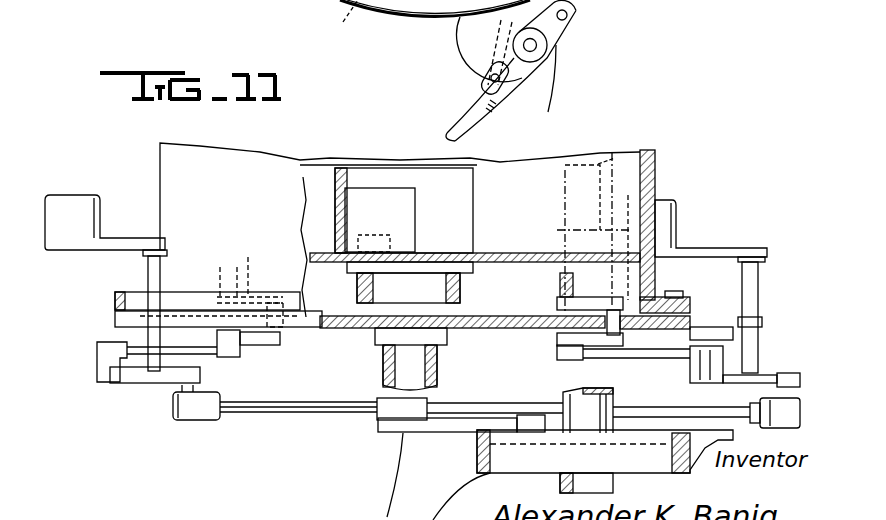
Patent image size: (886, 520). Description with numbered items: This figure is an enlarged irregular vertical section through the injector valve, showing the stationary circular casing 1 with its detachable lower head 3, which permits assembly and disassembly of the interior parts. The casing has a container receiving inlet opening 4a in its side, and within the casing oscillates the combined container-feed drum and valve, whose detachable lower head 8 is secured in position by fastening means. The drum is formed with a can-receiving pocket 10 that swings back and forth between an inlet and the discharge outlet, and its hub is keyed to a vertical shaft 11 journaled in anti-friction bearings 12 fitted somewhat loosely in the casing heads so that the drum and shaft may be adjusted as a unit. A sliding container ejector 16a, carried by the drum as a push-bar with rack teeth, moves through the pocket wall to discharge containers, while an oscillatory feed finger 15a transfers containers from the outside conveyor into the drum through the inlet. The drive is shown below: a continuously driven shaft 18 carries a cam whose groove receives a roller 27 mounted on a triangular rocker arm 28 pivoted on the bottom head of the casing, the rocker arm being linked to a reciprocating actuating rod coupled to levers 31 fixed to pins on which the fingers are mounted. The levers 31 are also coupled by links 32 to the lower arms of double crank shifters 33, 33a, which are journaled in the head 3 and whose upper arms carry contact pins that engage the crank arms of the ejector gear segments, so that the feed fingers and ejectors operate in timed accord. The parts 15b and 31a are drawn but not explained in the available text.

The stationary circular casing 1 is at (160, 173).
The detachable lower head 3 is at (605, 437).
The container receiving inlet opening 4a is at (393, 3).
The detachable lower head of drum 8 is at (517, 253).
The can-receiving pocket 10 is at (404, 210).
The shaft 11 is at (387, 362).
The anti-friction bearings 12 is at (443, 285).
The oscillatory feed finger 15a is at (672, 229).
The left bracket / lever 15b is at (62, 203).
The sliding container ejector 16a is at (390, 193).
The shaft 18 is at (610, 477).
The roller 27 is at (537, 417).
The triangular rocker arm 28 is at (457, 432).
The lever 31 is at (95, 403).
The post / link 31a is at (520, 72).
The link or connecting rod 32 is at (613, 404).
The double crank shifter 33 is at (597, 360).
The double crank shifter 33a is at (633, 280).